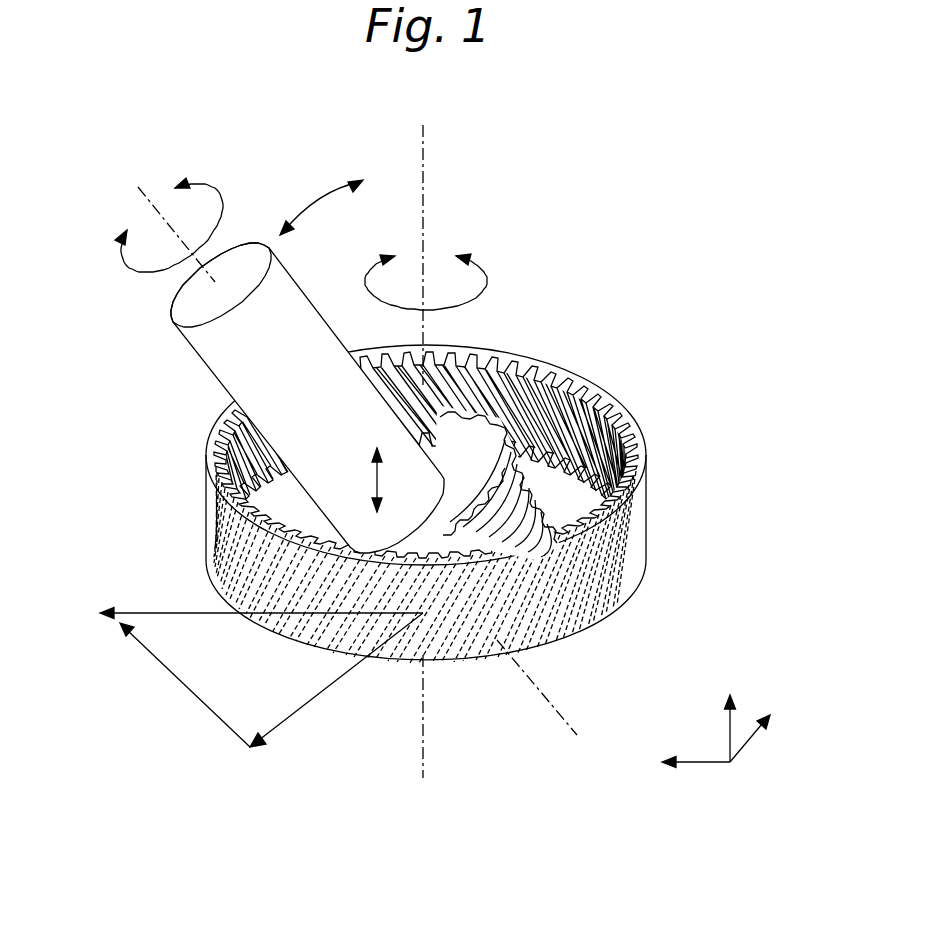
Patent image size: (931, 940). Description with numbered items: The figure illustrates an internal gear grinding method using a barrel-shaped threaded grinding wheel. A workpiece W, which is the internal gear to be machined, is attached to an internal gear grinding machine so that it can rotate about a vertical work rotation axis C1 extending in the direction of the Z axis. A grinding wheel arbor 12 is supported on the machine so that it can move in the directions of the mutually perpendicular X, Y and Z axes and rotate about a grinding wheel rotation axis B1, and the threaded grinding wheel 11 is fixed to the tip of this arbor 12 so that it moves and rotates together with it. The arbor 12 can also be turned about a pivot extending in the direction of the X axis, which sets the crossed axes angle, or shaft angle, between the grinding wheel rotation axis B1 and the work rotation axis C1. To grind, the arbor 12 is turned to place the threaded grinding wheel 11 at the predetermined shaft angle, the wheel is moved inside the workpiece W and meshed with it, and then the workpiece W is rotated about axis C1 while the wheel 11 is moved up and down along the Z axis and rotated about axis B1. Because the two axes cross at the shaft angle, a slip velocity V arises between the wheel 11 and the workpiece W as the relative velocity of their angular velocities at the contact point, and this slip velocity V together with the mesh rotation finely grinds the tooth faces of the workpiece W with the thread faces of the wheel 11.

The threaded grinding wheel 11 is at (530, 487).
The grinding wheel arbor 12 is at (212, 370).
The workpiece W is at (647, 505).
The grinding wheel rotation axis B1 is at (341, 447).
The work rotation axis C1 is at (426, 436).
The slip velocity V is at (185, 685).
The X axis X is at (759, 728).
The Y axis Y is at (684, 767).
The Z axis Z is at (729, 716).